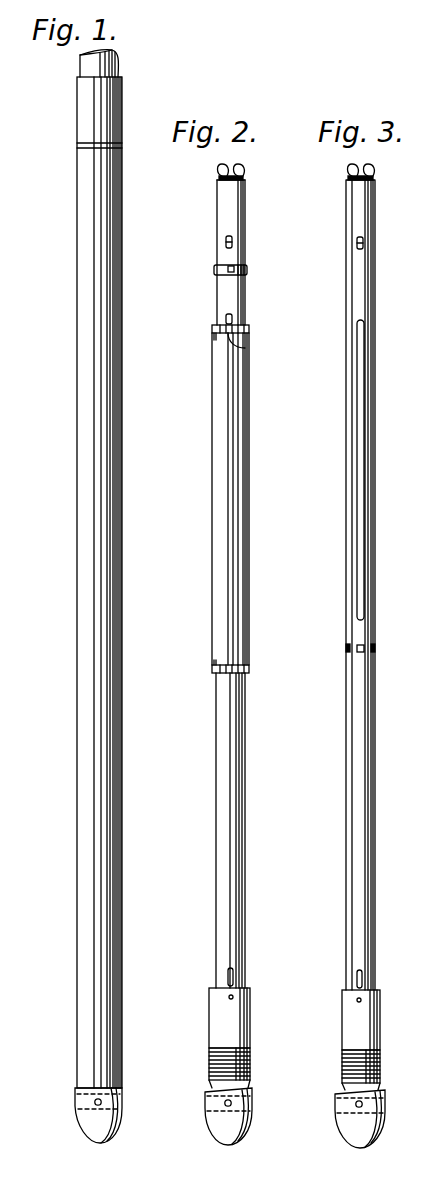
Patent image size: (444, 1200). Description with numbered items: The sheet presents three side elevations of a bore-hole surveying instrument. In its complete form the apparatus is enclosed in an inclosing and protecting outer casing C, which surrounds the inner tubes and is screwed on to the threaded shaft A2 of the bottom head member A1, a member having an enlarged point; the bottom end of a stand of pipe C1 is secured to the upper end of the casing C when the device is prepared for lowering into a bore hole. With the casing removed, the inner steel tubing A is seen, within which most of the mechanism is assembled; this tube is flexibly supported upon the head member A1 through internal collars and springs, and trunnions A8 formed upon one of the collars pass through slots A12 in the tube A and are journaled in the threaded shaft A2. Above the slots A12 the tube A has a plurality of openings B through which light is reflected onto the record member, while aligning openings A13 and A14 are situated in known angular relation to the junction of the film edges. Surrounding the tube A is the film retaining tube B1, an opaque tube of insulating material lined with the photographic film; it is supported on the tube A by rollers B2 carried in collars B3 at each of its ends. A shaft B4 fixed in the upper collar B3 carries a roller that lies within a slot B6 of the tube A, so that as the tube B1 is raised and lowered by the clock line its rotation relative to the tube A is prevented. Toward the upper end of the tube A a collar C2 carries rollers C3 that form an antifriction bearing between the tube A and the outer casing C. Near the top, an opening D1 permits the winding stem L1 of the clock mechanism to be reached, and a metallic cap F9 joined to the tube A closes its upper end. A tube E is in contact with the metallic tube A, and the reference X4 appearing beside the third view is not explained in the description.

In FIG. 2, the inner steel tubing A is at (237, 208).
In FIG. 3, the inner steel tubing A is at (348, 794).
In FIG. 1, the bottom head member A1 is at (90, 1124).
In FIG. 2, the bottom head member A1 is at (218, 1124).
In FIG. 3, the bottom head member A1 is at (348, 1128).
In FIG. 2, the threaded upwardly extending shaft A2 is at (212, 1060).
In FIG. 3, the threaded upwardly extending shaft A2 is at (346, 1040).
In FIG. 2, the trunnions A8 is at (229, 998).
In FIG. 3, the trunnions A8 is at (357, 1000).
In FIG. 2, the slots A12 is at (228, 975).
In FIG. 3, the slots A12 is at (357, 978).
In FIG. 1, the aligning opening A13 is at (129, 1109).
In FIG. 2, the aligning opening A13 is at (261, 1109).
In FIG. 3, the aligning opening A13 is at (394, 1109).
In FIG. 1, the aligning opening A14 is at (100, 1105).
In FIG. 2, the aligning opening A14 is at (230, 1106).
In FIG. 3, the aligning opening A14 is at (361, 1107).
In FIG. 3, the openings B is at (357, 648).
In FIG. 2, the film carrying tube B1 is at (212, 468).
In FIG. 2, the rollers B2 is at (213, 328).
In FIG. 2, the collars B3 is at (216, 338).
In FIG. 2, the shaft B4 is at (240, 340).
In FIG. 2, the slot B6 is at (228, 320).
In FIG. 3, the slot B6 is at (358, 422).
In FIG. 1, the outer casing C is at (78, 393).
In FIG. 1, the stand of pipe C1 is at (80, 66).
In FIG. 2, the collar C2 is at (247, 272).
In FIG. 2, the rollers C3 is at (240, 266).
In FIG. 3, the rollers C3 is at (435, 296).
In FIG. 2, the opening D1 is at (226, 240).
In FIG. 3, the opening D1 is at (363, 240).
In FIG. 2, the winding stem L1 is at (226, 244).
In FIG. 3, the winding stem L1 is at (363, 246).
In FIG. 2, the metallic cap F9 is at (245, 177).
In FIG. 3, the metallic cap F9 is at (375, 178).
In FIG. 3, the section line X4 is at (420, 797).
In FIG. 3, the tube E is at (439, 940).